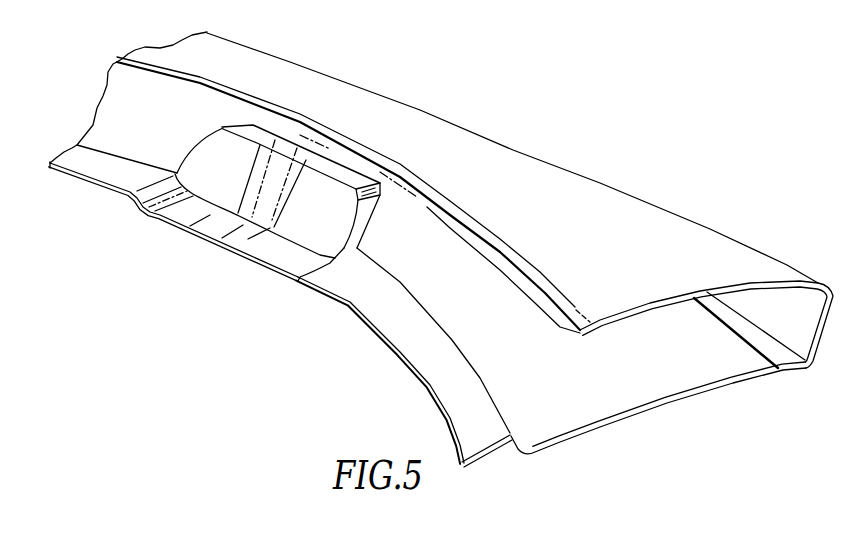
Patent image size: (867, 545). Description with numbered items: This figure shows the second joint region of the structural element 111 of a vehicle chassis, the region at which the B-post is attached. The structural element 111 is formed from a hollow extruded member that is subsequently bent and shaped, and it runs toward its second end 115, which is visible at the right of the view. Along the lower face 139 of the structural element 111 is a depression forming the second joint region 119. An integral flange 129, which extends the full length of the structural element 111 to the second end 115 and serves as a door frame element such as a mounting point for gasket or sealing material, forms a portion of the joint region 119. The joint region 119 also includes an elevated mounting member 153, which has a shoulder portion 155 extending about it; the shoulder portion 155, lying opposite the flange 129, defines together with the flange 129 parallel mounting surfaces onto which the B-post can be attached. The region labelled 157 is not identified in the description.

The structural element 111 is at (687, 221).
The second end 115 is at (668, 403).
The second joint region 119 is at (296, 282).
The flange 129 is at (398, 352).
The lower face 139 is at (507, 393).
The elevated mounting member 153 is at (222, 194).
The shoulder portion 155 is at (329, 162).
The recess / transition 157 is at (210, 162).